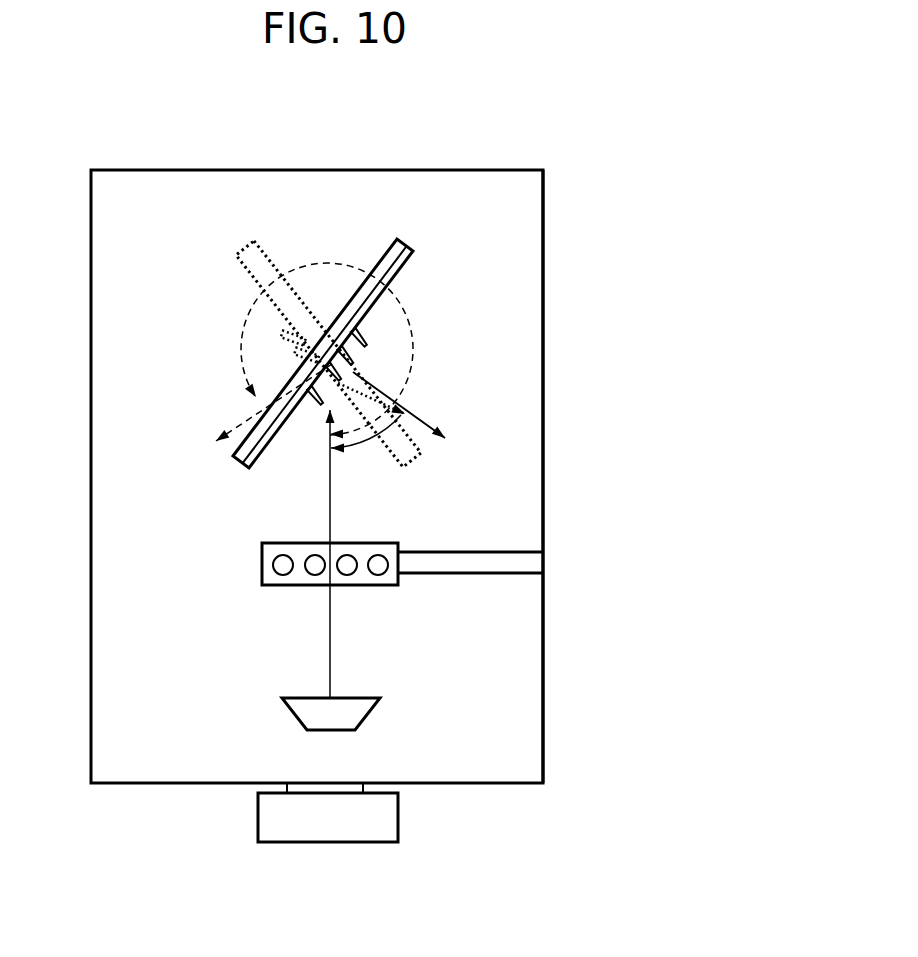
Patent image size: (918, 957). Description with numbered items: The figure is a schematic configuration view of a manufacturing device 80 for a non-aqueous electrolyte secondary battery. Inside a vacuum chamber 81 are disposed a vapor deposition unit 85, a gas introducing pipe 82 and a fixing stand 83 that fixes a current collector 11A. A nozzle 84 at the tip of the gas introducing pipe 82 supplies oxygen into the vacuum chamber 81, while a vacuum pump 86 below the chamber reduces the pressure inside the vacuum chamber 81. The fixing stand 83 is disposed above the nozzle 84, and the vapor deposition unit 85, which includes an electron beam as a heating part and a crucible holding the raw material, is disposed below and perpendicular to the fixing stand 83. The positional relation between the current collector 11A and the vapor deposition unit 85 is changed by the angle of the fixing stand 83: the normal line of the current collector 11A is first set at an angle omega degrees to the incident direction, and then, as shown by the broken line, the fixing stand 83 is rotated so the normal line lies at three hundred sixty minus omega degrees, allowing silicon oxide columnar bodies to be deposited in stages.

The manufacturing device 80 is at (75, 177).
The vacuum chamber 81 is at (541, 182).
The gas introducing pipe 82 is at (487, 558).
The fixing stand 83 is at (383, 243).
The current collector 11A is at (402, 273).
The nozzle 84 is at (380, 587).
The vapor deposition unit 85 is at (347, 720).
The vacuum pump 86 is at (268, 833).